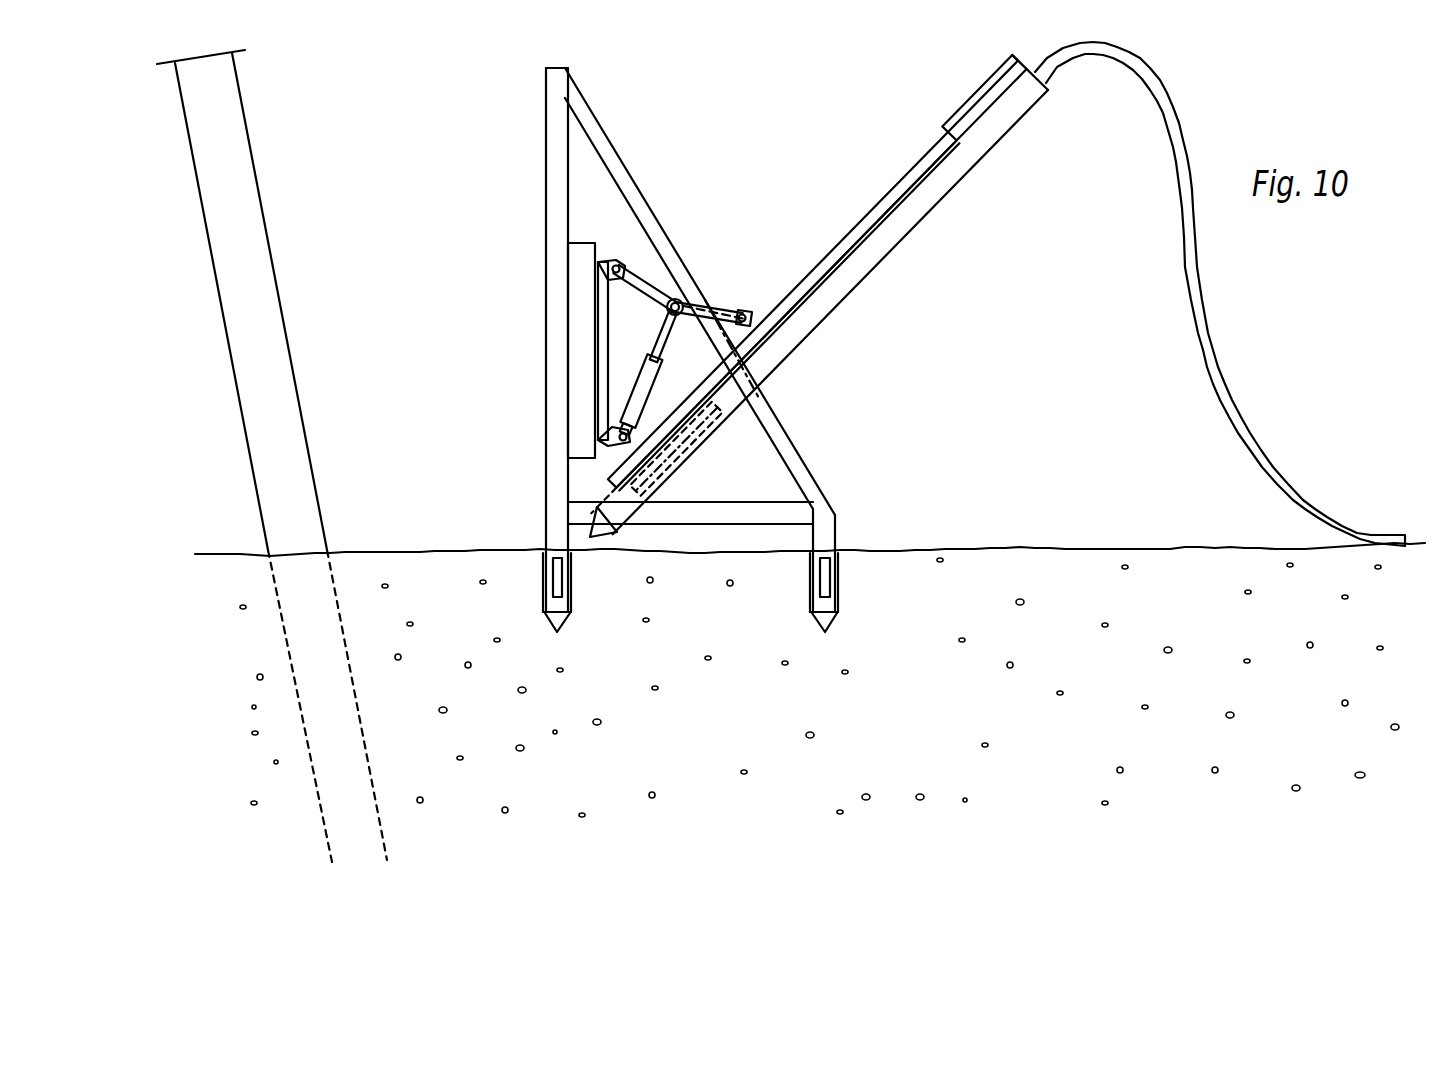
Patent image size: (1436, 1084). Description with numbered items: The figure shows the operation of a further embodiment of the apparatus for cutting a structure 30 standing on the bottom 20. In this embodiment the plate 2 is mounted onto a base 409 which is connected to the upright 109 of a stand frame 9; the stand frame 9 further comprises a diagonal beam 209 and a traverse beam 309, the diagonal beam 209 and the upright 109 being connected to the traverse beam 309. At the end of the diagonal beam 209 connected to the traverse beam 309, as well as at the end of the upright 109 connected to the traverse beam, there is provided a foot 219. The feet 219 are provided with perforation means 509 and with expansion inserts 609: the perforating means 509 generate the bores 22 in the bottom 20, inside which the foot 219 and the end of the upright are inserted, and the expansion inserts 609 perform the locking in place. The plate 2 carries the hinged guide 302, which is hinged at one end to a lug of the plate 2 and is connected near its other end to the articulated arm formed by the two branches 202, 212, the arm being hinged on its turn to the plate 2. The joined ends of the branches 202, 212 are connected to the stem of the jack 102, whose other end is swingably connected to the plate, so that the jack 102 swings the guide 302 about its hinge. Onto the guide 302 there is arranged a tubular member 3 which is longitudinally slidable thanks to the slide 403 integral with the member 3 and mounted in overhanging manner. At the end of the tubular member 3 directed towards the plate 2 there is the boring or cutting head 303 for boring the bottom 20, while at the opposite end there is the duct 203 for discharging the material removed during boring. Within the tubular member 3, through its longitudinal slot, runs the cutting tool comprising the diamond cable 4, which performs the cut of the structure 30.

The stand frame 9 is at (677, 323).
The upright 109 is at (550, 206).
The diagonal beam 209 is at (632, 178).
The traverse beam 309 is at (778, 503).
The foot 219 is at (830, 535).
The bore 22 is at (840, 592).
The expansion insert 609 is at (808, 578).
The perforation means 509 is at (563, 620).
The base 409 is at (580, 405).
The plate 2 is at (612, 262).
The branch of articulated arm 202 is at (665, 277).
The branch of articulated arm 212 is at (733, 305).
The jack 102 is at (650, 358).
The tubular member 3 is at (882, 260).
The guide 302 is at (906, 175).
The slide 403 is at (962, 118).
The diamond cable 4 is at (688, 455).
The boring head 303 is at (599, 540).
The duct 203 is at (1210, 348).
The bottom 20 is at (1190, 562).
The structure 30 is at (280, 318).